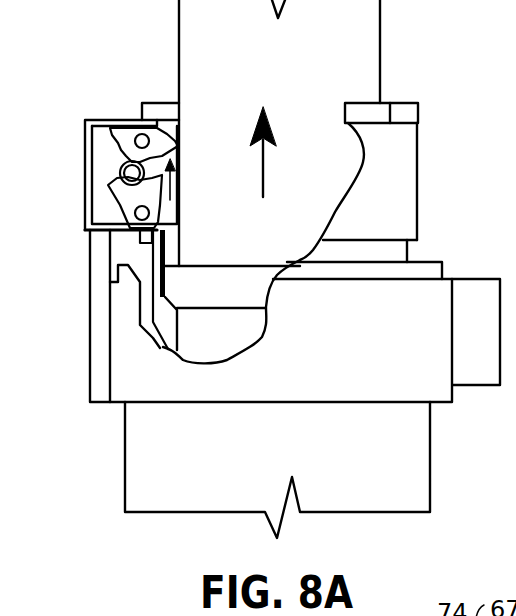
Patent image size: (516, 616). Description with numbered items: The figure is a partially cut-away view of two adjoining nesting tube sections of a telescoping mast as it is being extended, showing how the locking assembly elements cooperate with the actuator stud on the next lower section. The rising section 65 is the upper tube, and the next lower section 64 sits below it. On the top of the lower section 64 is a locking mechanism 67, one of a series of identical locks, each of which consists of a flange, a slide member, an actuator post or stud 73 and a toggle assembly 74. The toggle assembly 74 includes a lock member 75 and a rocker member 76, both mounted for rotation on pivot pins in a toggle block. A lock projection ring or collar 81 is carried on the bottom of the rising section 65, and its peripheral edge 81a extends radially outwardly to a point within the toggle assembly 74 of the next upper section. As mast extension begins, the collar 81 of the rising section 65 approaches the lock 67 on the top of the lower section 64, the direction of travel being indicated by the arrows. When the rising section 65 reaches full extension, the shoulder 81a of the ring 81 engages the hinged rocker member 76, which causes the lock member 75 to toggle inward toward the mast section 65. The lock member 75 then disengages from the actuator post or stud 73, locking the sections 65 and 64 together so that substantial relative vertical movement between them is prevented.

The next lower section 64 is at (430, 476).
The rising section 65 is at (380, 56).
The locking mechanism 67 is at (125, 119).
The actuator post or stud 73 is at (90, 347).
The toggle assembly 74 is at (83, 173).
The lock member 75 is at (128, 198).
The rocker member 76 is at (170, 144).
The lock projection ring or collar 81 is at (227, 268).
The peripheral edge or shoulder 81a is at (167, 268).